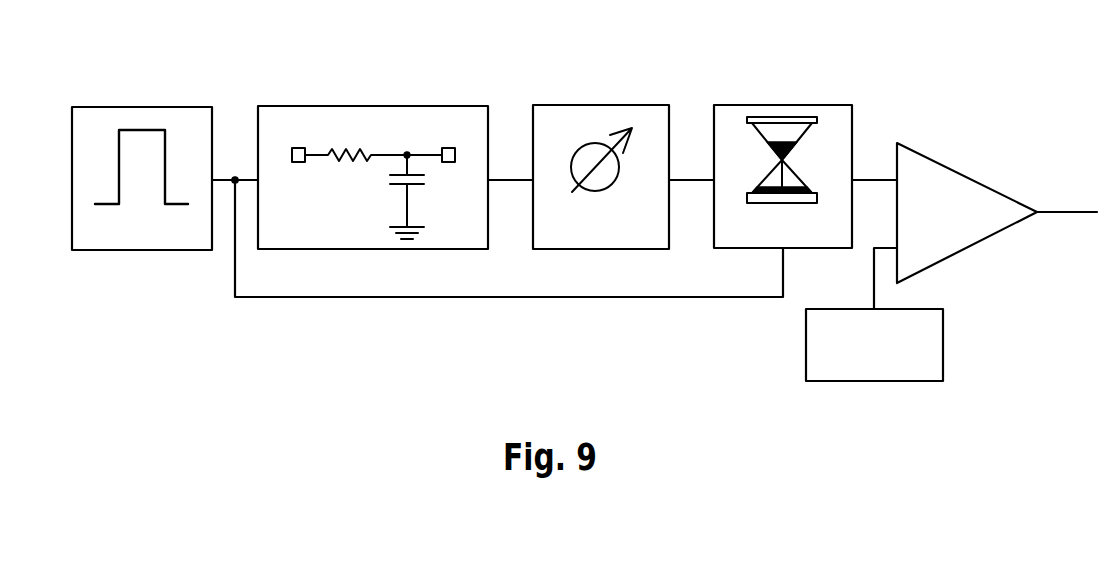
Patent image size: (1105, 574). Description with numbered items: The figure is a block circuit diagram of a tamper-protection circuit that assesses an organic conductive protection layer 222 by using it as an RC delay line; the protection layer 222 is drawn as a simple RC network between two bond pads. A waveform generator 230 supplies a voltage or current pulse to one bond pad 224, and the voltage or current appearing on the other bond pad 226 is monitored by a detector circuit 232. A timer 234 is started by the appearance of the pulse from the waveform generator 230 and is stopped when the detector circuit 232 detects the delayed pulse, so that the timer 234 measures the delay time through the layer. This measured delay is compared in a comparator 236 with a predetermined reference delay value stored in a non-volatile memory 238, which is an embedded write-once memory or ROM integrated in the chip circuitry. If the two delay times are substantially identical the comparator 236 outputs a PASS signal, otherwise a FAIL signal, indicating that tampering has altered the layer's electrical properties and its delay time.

The protection layer 222 is at (371, 148).
The bond pad 224 is at (298, 148).
The bond pad 226 is at (476, 110).
The waveform generator 230 is at (125, 108).
The detector circuit 232 is at (593, 105).
The timer 234 is at (785, 105).
The comparator 236 is at (957, 170).
The non-volatile memory 238 is at (943, 347).